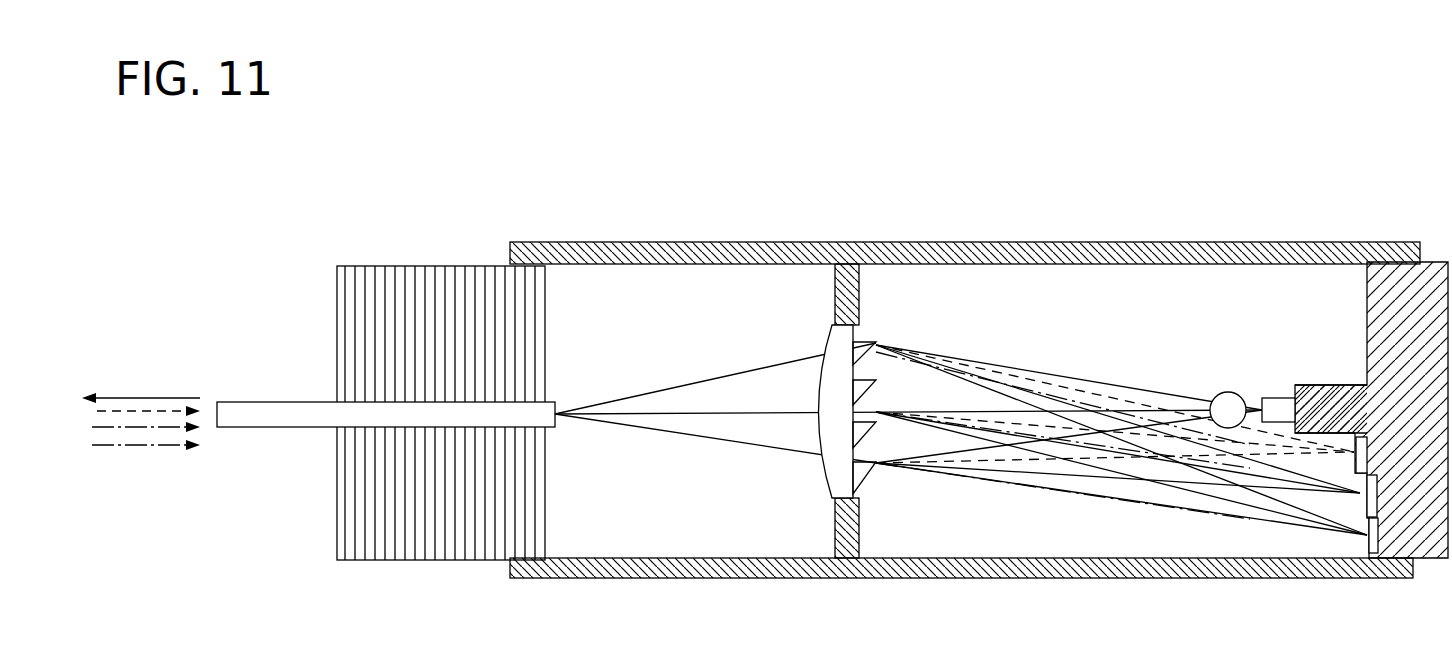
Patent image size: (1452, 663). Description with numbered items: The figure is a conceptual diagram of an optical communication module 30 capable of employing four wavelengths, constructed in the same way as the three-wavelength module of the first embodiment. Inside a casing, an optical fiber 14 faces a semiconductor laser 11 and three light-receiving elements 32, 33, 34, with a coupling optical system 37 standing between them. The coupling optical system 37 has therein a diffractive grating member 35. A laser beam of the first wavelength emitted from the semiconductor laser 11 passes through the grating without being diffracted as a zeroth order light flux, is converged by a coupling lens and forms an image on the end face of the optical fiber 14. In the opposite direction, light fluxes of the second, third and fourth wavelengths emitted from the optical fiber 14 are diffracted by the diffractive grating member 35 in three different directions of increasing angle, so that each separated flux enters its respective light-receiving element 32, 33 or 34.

The optical fiber 14 is at (260, 401).
The optical communication module 30 is at (1395, 226).
The semiconductor laser 11 is at (1280, 398).
The coupling optical system 37 is at (1218, 388).
The diffractive grating member 35 is at (856, 341).
The light-receiving element 32 is at (1352, 460).
The light-receiving element 33 is at (1368, 510).
The light-receiving element 34 is at (1374, 553).